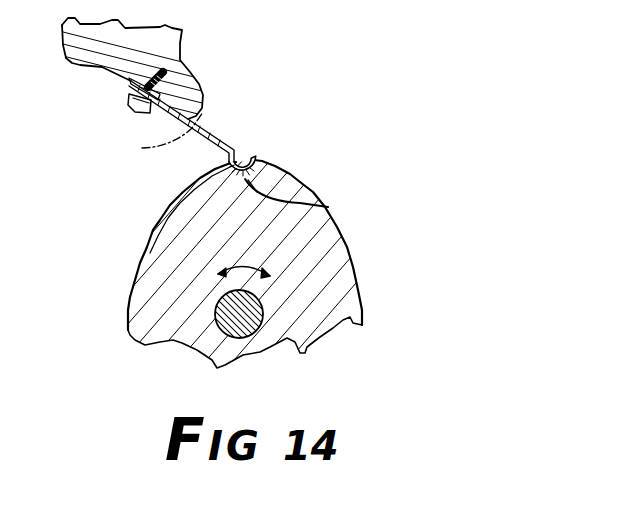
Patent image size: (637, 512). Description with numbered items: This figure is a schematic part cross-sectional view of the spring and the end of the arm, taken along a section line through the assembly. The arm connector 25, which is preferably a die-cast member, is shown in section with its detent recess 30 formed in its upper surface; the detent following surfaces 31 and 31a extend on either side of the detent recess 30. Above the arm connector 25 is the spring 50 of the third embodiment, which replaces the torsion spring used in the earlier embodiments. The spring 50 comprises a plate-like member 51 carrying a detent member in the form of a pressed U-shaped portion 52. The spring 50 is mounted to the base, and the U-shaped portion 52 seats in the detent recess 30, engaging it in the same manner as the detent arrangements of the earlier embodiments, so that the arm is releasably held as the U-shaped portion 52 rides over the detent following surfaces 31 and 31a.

The arm connector 25 is at (377, 95).
The detent recess 30 is at (328, 207).
The detent following surface 31 is at (318, 190).
The detent following surface 31a is at (192, 182).
The spring 50 is at (213, 110).
The plate-like member 51 is at (142, 148).
The pressed U-shaped portion 52 is at (257, 156).